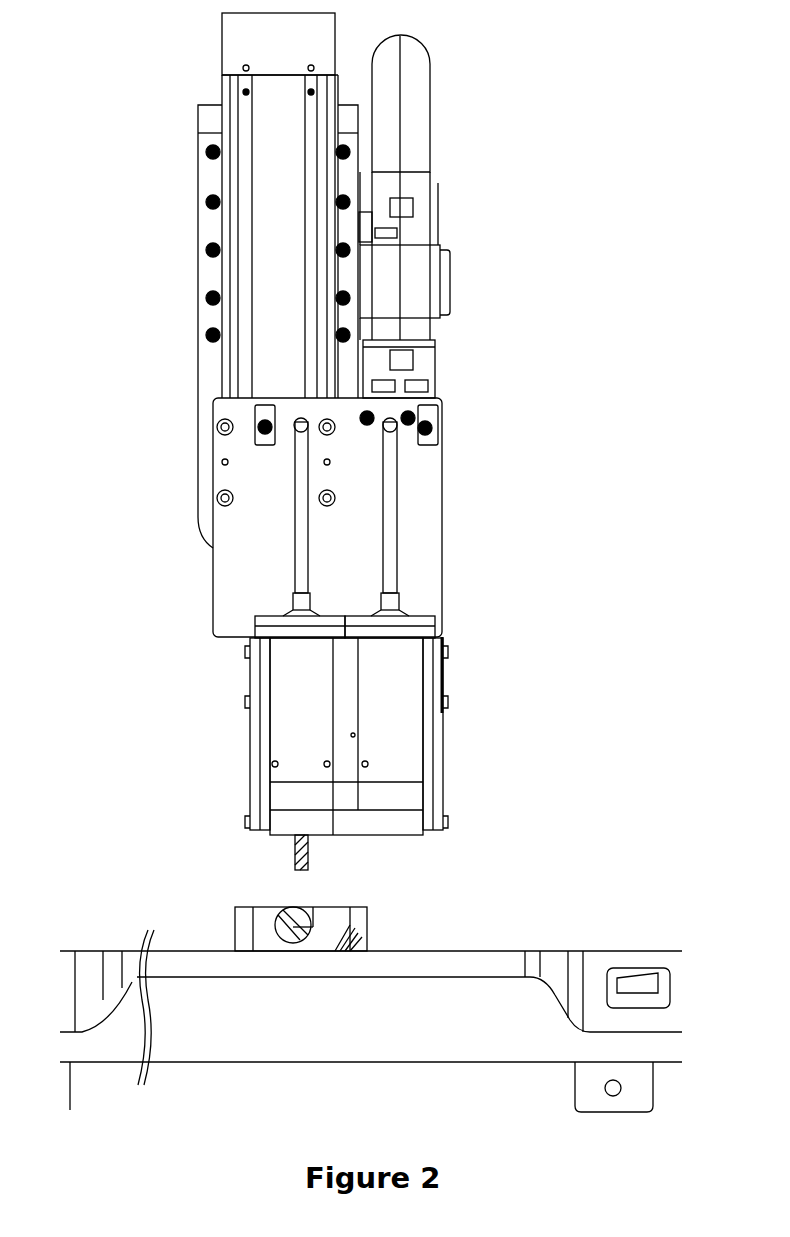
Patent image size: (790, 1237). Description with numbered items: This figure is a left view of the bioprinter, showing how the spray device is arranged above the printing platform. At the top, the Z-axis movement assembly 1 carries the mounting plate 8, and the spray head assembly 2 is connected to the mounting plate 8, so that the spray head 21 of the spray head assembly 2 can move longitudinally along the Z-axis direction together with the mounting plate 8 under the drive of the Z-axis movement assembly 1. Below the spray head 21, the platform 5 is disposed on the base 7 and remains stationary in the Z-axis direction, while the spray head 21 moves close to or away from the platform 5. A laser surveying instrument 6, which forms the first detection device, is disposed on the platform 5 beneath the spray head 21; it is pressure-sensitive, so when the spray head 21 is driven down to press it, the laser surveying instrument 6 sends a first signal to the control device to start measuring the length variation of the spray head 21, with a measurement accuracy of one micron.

The Z-axis movement assembly 1 is at (277, 220).
The mounting plate 8 is at (363, 480).
The spray head assembly 2 is at (385, 723).
The spray head 21 is at (298, 855).
The laser surveying instrument 6 is at (298, 916).
The platform 5 is at (343, 923).
The base 7 is at (450, 1027).